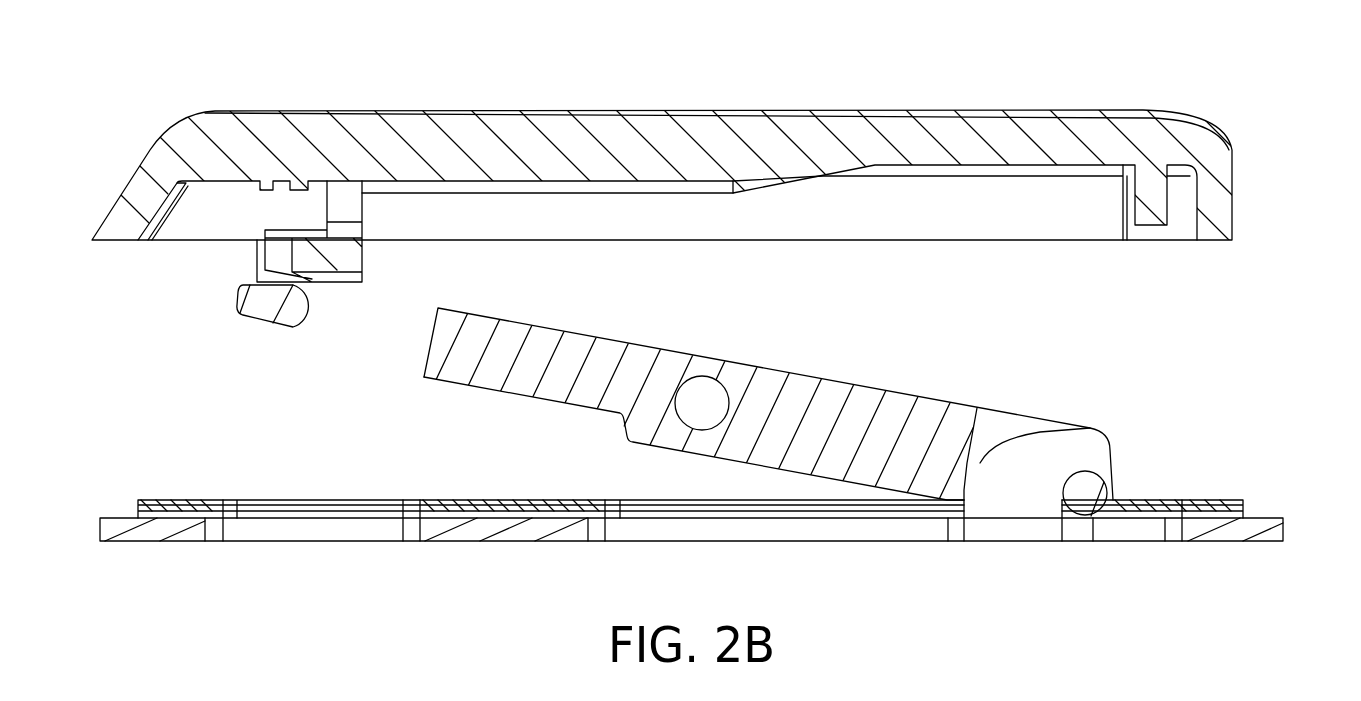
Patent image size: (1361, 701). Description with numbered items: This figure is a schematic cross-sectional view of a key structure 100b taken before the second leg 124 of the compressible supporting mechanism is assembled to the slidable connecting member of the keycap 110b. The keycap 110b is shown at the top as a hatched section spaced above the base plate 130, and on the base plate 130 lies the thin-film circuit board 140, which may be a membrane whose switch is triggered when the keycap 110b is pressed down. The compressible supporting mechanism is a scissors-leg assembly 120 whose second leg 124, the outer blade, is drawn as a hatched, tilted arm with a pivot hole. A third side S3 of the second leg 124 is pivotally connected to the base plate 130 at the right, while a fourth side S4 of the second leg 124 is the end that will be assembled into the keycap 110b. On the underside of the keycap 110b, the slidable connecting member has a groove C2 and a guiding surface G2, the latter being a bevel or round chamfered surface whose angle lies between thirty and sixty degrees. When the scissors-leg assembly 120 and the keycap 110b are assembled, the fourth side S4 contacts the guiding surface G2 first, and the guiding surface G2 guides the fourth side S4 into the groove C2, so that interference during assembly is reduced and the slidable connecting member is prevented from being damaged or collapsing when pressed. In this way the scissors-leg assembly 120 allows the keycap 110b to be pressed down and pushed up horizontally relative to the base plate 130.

The key structure 100b is at (693, 319).
The keycap 110b is at (979, 113).
The scissors-leg assembly 120 is at (741, 417).
The second leg 124 is at (858, 412).
The base plate 130 is at (1250, 533).
The thin-film circuit board 140 is at (1190, 502).
The groove C2 is at (318, 207).
The guiding surface G2 is at (312, 279).
The third side S3 is at (1120, 488).
The fourth side S4 is at (255, 330).